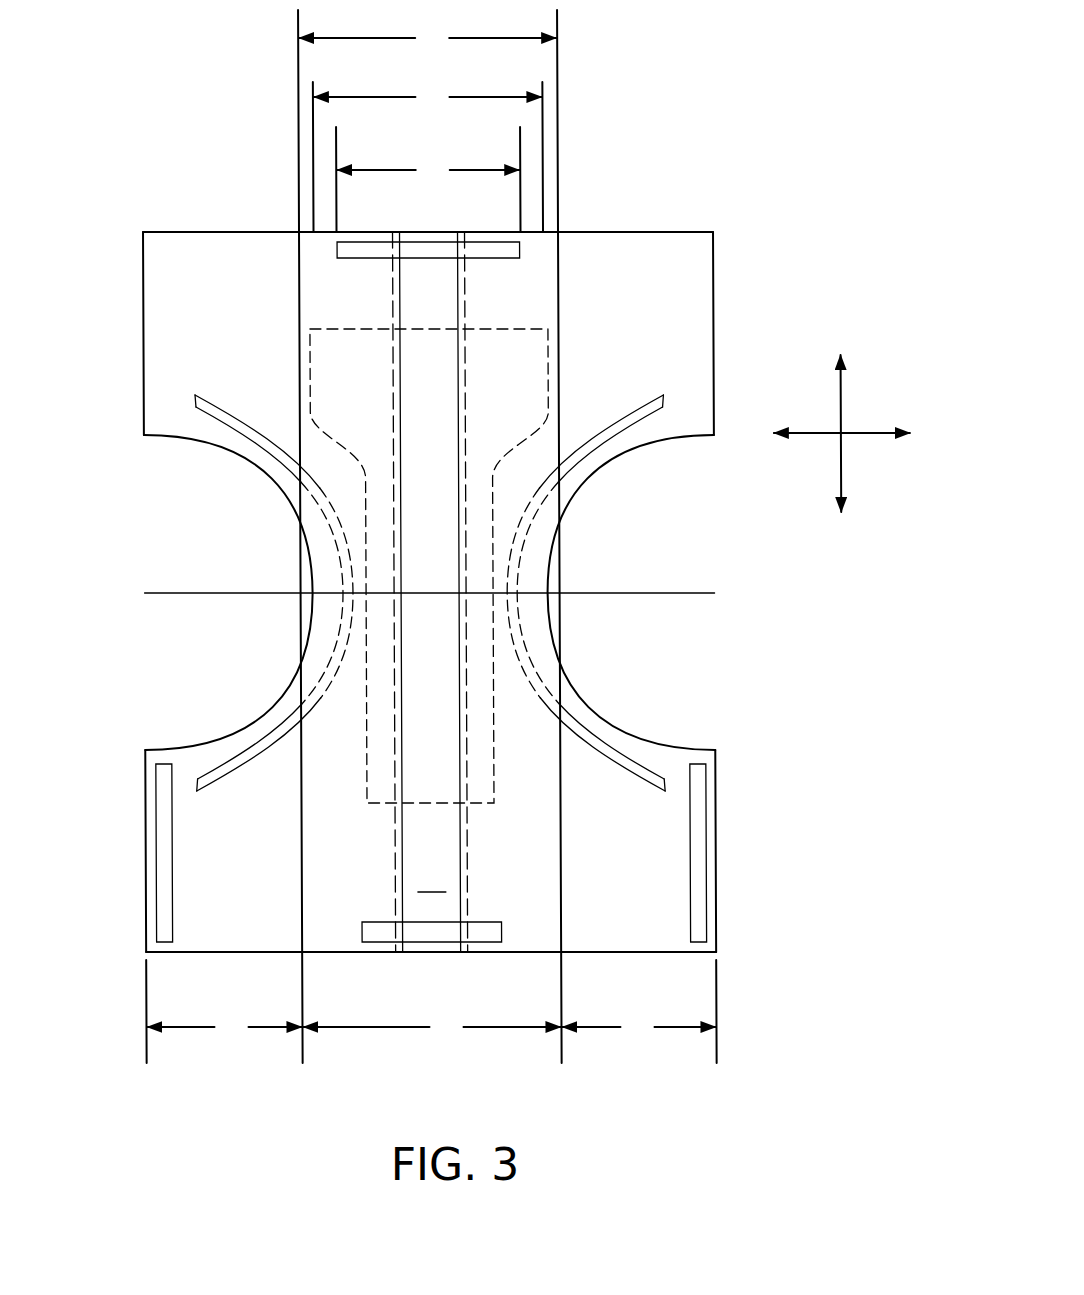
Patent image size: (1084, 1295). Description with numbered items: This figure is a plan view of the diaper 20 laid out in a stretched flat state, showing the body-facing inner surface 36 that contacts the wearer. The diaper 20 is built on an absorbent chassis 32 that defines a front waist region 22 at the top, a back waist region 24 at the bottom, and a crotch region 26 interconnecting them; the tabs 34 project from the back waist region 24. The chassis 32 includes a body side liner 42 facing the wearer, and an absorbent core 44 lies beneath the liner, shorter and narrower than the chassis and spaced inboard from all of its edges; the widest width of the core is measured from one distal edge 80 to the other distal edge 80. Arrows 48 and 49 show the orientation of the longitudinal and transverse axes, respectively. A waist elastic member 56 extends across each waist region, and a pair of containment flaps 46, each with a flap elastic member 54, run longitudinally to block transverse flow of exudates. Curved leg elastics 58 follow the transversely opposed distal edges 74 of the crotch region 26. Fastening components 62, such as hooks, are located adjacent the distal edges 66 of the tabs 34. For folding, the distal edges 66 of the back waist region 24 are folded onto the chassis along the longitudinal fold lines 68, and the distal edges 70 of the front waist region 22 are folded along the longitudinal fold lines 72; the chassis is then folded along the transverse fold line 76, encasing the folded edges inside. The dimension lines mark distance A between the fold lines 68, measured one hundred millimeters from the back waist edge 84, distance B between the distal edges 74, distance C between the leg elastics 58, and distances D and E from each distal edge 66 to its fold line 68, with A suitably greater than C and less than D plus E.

The diaper 20 is at (746, 98).
The front waist region 22 is at (649, 258).
The back waist region 24 is at (665, 878).
The crotch region 26 is at (528, 572).
The absorbent chassis 32 is at (157, 372).
The tabs 34 is at (150, 885).
The body-facing inner surface 36 is at (713, 283).
The body side liner 42 is at (431, 878).
The absorbent core 44 is at (560, 345).
The containment flaps 46 is at (330, 283).
The longitudinal axis arrow 48 is at (842, 378).
The transverse axis arrow 49 is at (860, 440).
The flap elastic member 54 is at (397, 718).
The waist elastic member 56 is at (421, 256).
The leg elastics 58 is at (227, 772).
The fastening components 62 is at (165, 822).
The distal edges of the back waist region 66 is at (150, 763).
The longitudinal fold lines 68 is at (298, 862).
The distal edges of the front waist region 70 is at (142, 305).
The longitudinal fold lines 72 is at (305, 356).
The distal edges of the crotch region 74 is at (280, 682).
The transverse fold line 76 is at (683, 592).
The distal edge of the absorbent core 80 is at (305, 390).
The back waist edge 84 is at (418, 955).